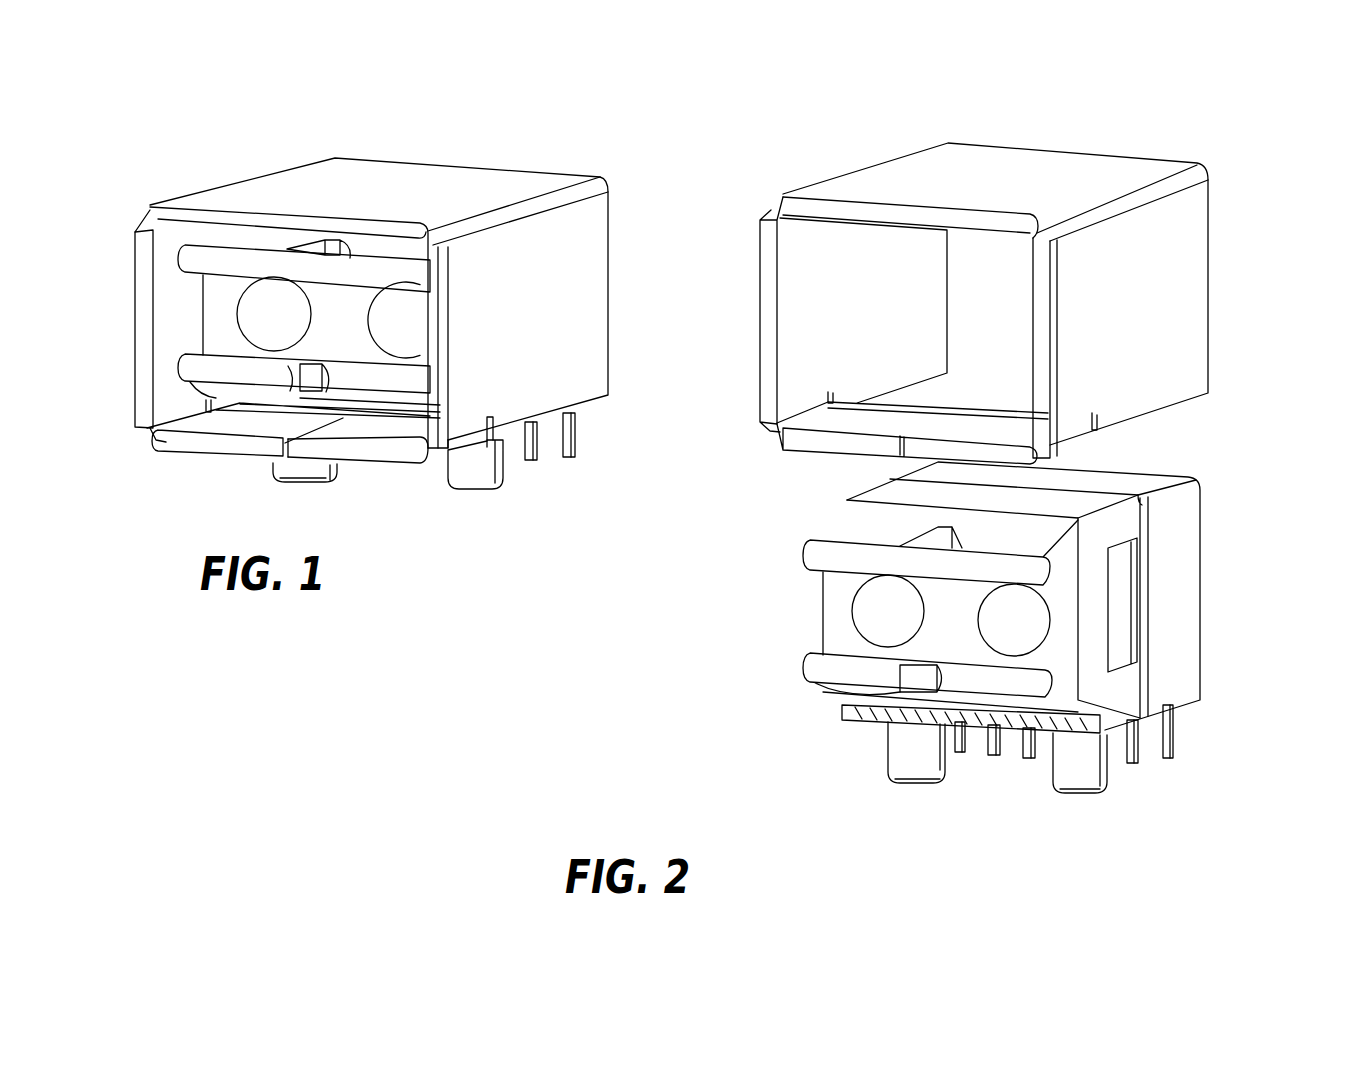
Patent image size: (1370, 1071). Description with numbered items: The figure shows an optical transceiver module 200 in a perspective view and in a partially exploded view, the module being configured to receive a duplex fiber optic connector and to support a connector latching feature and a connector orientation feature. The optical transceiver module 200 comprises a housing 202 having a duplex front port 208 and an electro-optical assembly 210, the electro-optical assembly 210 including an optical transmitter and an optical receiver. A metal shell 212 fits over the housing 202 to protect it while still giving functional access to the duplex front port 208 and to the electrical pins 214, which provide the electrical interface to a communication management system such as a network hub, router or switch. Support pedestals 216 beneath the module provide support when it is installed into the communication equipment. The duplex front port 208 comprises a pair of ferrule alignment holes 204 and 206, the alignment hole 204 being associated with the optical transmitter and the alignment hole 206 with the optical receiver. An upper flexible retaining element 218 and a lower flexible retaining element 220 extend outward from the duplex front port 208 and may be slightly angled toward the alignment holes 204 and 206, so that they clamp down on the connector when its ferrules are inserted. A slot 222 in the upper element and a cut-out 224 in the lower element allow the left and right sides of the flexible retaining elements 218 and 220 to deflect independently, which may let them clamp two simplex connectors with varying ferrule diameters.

In FIG. 1, the optical transceiver module 200 is at (206, 103).
In FIG. 2, the optical transceiver module 200 is at (797, 130).
In FIG. 2, the housing 202 is at (1206, 437).
In FIG. 2, the ferrule alignment hole 204 is at (880, 610).
In FIG. 2, the ferrule alignment hole 206 is at (1008, 630).
In FIG. 2, the duplex front port 208 is at (1127, 690).
In FIG. 2, the electro-optical assembly 210 is at (1163, 603).
In FIG. 2, the metal shell 212 is at (1108, 293).
In FIG. 1, the electrical pins 214 is at (548, 477).
In FIG. 2, the electrical pins 214 is at (990, 768).
In FIG. 2, the support pedestals 216 is at (892, 773).
In FIG. 2, the upper flexible retaining element 218 is at (823, 548).
In FIG. 2, the lower flexible retaining element 220 is at (823, 670).
In FIG. 1, the slot 222 is at (296, 240).
In FIG. 2, the slot 222 is at (890, 528).
In FIG. 1, the cut-out 224 is at (297, 370).
In FIG. 2, the cut-out 224 is at (913, 690).